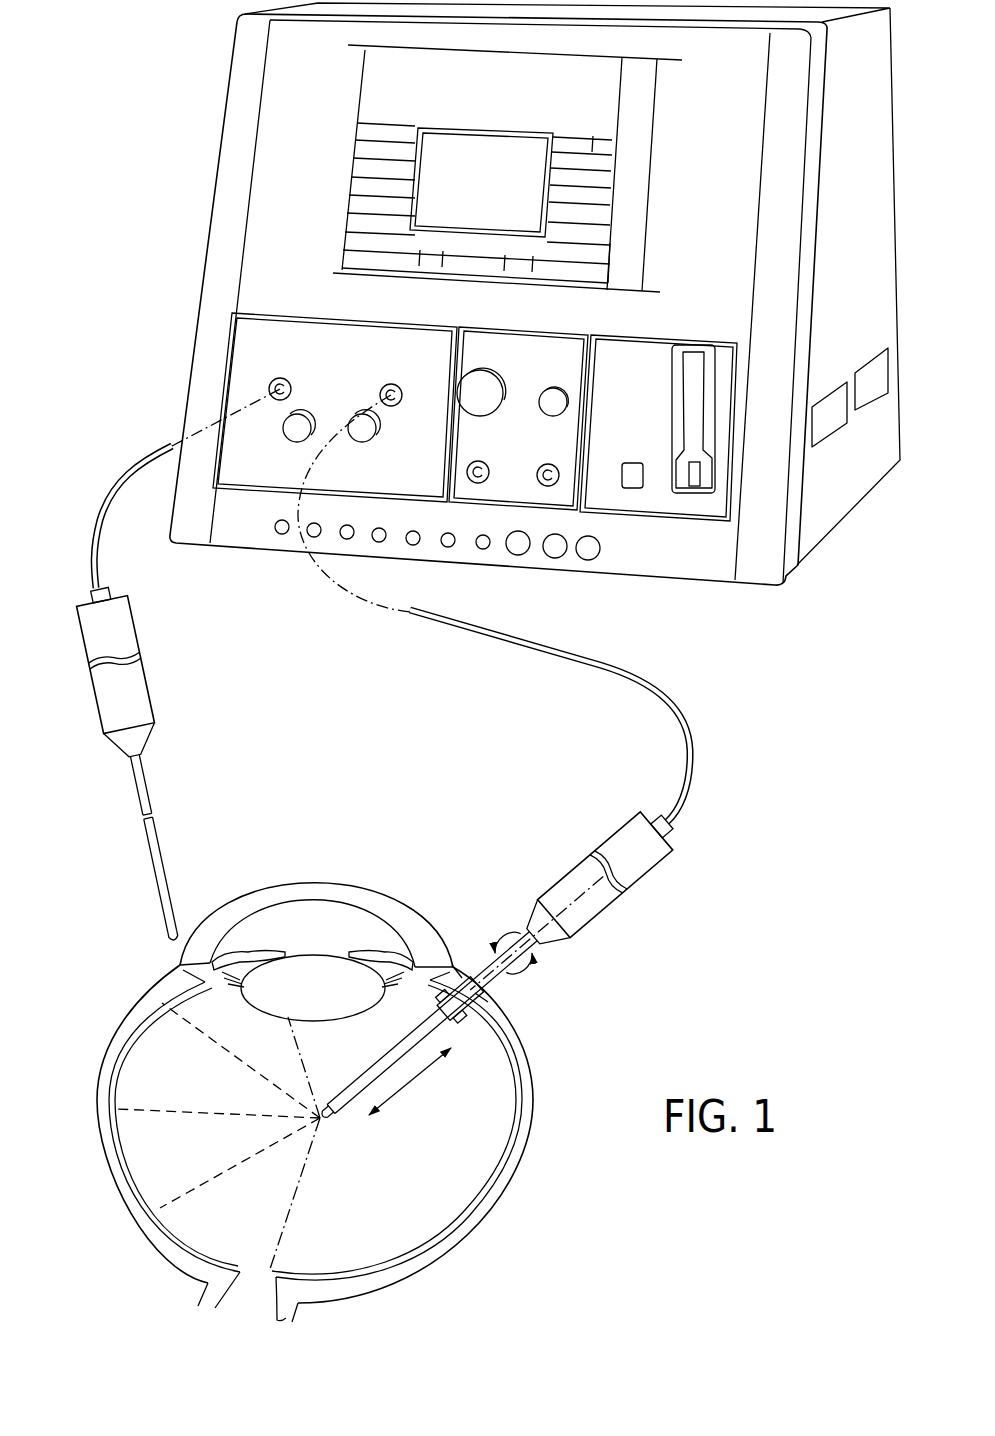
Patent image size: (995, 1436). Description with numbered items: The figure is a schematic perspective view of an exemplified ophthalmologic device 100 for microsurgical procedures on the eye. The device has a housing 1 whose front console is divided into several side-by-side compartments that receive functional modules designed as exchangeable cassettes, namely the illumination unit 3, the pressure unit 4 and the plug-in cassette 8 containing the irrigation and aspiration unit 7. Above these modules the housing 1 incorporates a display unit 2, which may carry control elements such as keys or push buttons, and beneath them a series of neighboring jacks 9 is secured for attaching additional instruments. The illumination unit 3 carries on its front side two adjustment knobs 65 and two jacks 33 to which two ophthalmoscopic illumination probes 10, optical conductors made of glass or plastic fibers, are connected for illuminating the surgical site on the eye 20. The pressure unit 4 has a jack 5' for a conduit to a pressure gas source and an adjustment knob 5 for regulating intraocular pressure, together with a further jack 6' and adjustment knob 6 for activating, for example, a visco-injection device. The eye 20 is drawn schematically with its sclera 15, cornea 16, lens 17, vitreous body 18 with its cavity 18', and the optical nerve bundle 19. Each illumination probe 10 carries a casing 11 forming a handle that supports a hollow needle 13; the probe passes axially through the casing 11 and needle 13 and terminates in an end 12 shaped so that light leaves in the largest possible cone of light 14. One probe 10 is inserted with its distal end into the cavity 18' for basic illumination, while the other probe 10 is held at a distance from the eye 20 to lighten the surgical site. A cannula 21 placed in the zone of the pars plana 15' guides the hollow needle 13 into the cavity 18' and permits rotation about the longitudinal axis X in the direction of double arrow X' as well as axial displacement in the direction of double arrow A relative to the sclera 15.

The housing 1 is at (217, 122).
The ophthalmologic device 100 is at (187, 262).
The display unit 2 is at (658, 200).
The illumination unit module 3 is at (323, 374).
The pressure unit module 4 is at (516, 372).
The adjustment knob 5 is at (481, 352).
The adjustment knob 6 is at (553, 356).
The jack 5' is at (466, 533).
The jack 6' is at (538, 537).
The irrigation and aspiration unit 7 is at (619, 384).
The plug-in cassette 8 is at (662, 418).
The jacks 9 is at (608, 548).
The jack 33 is at (276, 380).
The adjustment knob 65 is at (288, 433).
The ophthalmoscopic illumination probe 10 is at (100, 552).
The casing 11 is at (130, 683).
The end 12 is at (165, 938).
The hollow needle 13 is at (157, 846).
The cone of light 14 is at (181, 1161).
The sclera 15 is at (348, 1133).
The pars plana 15' is at (454, 947).
The cornea 16 is at (285, 897).
The lens 17 is at (298, 994).
The vitreous body 18 is at (321, 1129).
The cavity 18' is at (345, 1227).
The optical nerve bundle 19 is at (233, 1308).
The eye 20 is at (367, 890).
The cannula 21 is at (484, 996).
The longitudinal axis X is at (559, 933).
The double arrow X' is at (508, 927).
The double arrow A is at (410, 1094).